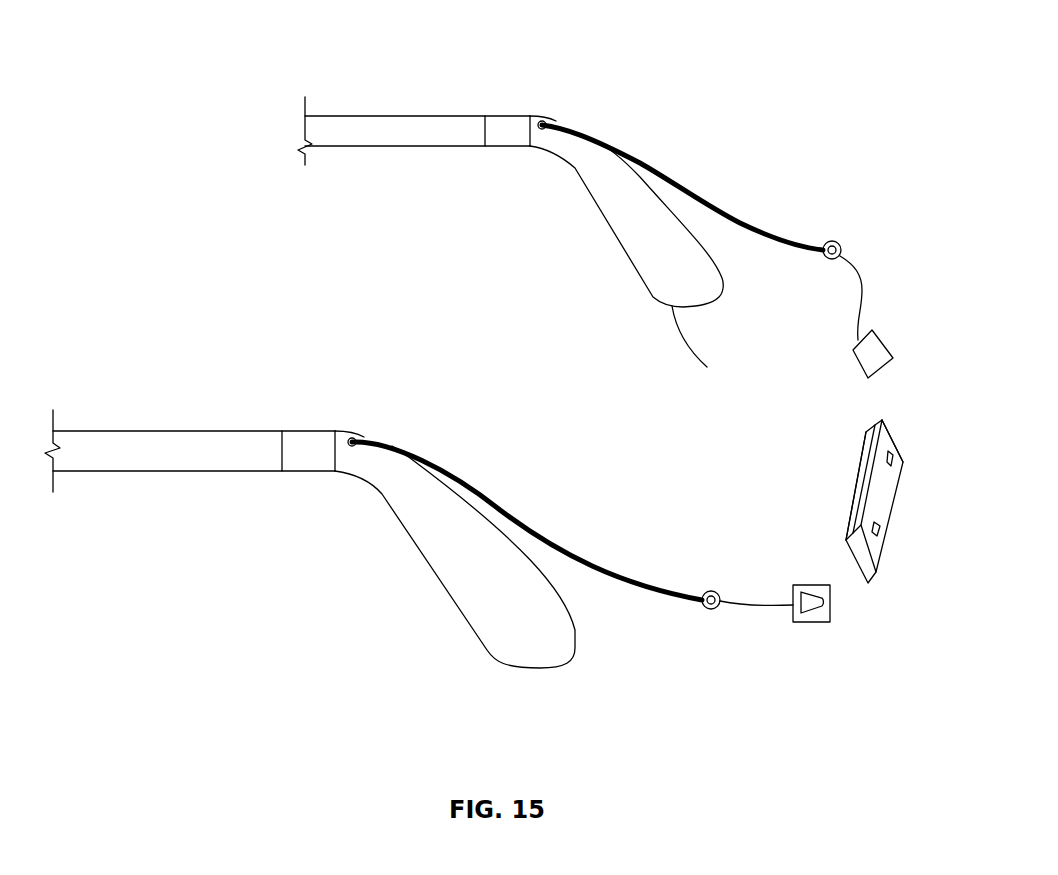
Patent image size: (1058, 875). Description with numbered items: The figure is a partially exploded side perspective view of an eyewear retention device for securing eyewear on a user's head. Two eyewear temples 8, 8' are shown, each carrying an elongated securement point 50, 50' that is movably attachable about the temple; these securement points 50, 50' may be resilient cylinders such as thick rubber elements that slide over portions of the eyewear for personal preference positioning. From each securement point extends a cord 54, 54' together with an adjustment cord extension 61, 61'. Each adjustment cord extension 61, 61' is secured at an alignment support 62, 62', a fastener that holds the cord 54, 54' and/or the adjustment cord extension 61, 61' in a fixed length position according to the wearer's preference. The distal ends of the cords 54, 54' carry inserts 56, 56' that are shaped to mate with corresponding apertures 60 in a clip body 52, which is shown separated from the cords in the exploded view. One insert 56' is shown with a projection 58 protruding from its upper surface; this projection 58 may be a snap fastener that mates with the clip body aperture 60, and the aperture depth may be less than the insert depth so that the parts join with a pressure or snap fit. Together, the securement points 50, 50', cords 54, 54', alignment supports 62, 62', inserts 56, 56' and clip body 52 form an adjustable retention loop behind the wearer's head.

The temple 8 is at (414, 98).
The elongated securement point 50 is at (494, 84).
The adjustment cord extension 61 is at (682, 169).
The alignment support 62 is at (869, 199).
The cord 54 is at (894, 275).
The insert 56 is at (903, 333).
The temple 8' is at (190, 415).
The elongated securement point 50' is at (305, 404).
The adjustment cord extension 61' is at (527, 521).
The alignment support 62' is at (696, 545).
The cord 54' is at (746, 628).
The insert 56' is at (839, 658).
The projection 58 is at (796, 620).
The clip body 52 is at (888, 508).
The aperture 60 is at (898, 434).